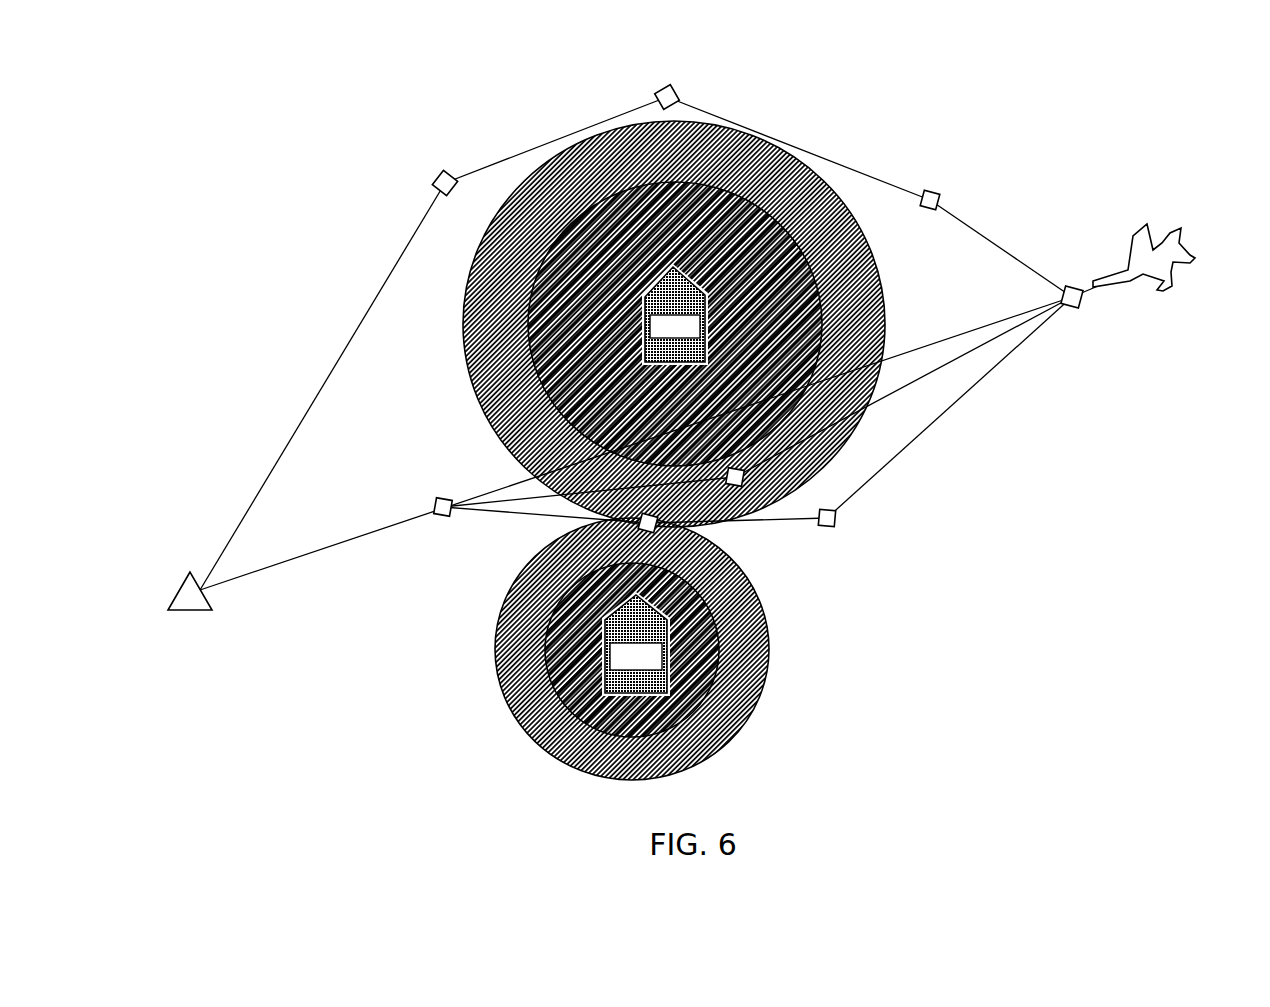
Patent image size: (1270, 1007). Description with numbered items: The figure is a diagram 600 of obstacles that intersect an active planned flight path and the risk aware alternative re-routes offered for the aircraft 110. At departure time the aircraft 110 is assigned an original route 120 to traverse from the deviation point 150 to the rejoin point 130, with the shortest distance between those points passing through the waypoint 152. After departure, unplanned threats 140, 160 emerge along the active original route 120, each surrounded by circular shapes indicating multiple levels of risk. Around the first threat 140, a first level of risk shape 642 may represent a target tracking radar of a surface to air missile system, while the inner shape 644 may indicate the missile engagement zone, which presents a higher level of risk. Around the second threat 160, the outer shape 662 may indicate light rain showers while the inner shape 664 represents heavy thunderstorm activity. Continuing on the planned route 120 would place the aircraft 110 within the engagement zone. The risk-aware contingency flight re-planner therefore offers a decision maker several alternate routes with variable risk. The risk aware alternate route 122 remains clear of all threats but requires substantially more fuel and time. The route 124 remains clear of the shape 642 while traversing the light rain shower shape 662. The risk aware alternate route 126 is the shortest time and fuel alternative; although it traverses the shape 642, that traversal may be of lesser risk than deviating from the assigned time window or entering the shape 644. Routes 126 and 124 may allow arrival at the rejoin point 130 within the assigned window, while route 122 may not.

The system environment 600 is at (146, 134).
The aircraft 110 is at (1163, 293).
The original route 120 is at (921, 347).
The risk aware alternate route 122 is at (864, 170).
The route 124 is at (882, 488).
The risk aware alternate route 126 is at (915, 385).
The rejoin point 130 is at (190, 612).
The threat 140 is at (675, 314).
The deviation point 150 is at (1077, 310).
The waypoint 152 is at (441, 518).
The threat 160 is at (636, 644).
The first level of risk shape 642 is at (470, 392).
The shape 644 is at (527, 305).
The shape 662 is at (755, 718).
The shape 664 is at (718, 665).